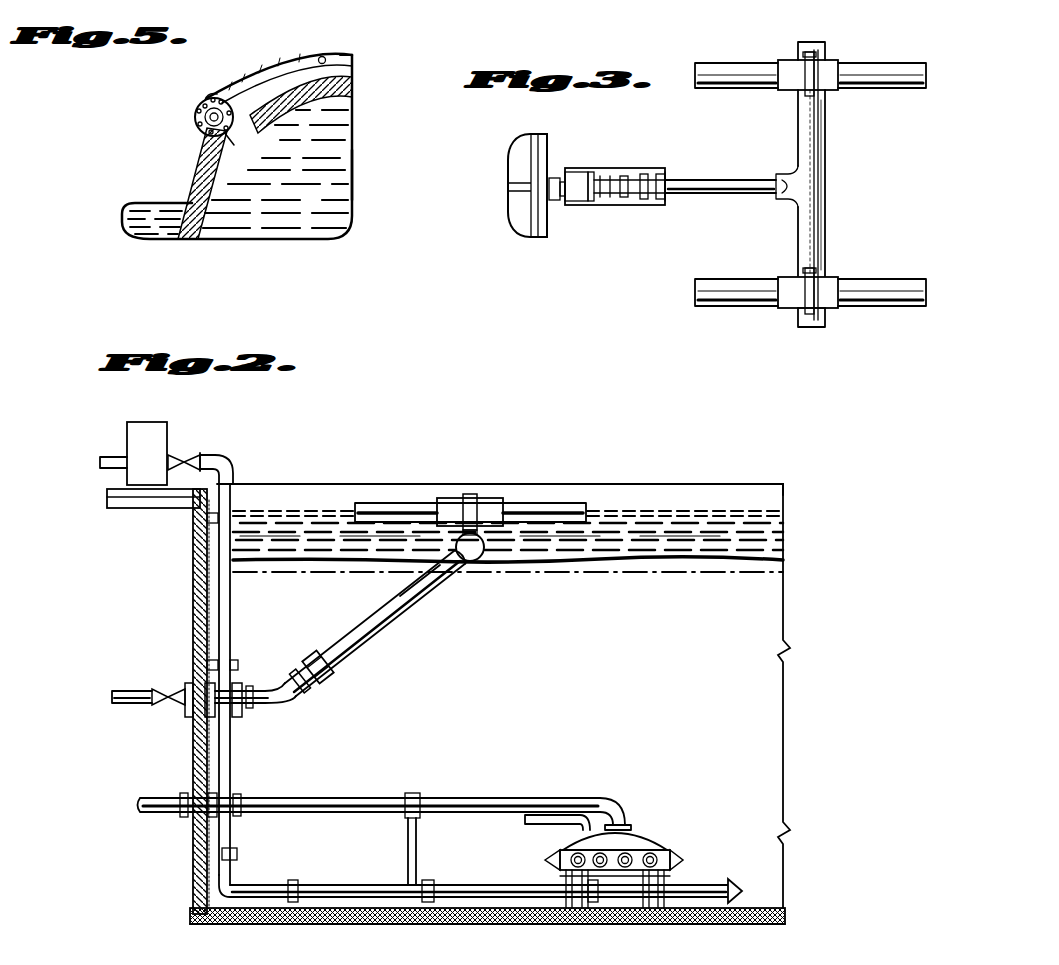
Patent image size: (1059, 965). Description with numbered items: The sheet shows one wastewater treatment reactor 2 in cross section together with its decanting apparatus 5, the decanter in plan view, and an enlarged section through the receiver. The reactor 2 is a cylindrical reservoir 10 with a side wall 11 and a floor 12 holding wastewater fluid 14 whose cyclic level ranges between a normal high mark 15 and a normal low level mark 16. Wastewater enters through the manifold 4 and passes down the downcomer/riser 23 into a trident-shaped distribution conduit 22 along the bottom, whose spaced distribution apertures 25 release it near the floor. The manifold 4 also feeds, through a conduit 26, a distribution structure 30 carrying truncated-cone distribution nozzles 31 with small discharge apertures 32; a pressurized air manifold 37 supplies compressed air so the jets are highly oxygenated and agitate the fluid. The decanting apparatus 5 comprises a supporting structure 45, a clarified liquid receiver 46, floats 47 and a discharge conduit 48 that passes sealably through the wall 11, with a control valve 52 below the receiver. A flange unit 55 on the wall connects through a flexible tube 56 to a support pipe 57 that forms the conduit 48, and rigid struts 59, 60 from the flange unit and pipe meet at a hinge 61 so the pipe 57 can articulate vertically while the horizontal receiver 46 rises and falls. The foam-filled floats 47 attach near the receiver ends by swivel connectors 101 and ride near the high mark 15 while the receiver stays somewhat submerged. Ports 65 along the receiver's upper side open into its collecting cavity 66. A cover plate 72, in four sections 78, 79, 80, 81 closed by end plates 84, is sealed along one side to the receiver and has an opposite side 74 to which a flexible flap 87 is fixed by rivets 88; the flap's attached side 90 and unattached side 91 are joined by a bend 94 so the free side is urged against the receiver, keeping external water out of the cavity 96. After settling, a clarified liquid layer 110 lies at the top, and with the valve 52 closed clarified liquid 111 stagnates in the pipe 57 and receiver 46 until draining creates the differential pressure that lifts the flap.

In FIG. 2, the reactor 2 is at (193, 598).
In FIG. 2, the manifold 4 is at (204, 458).
In FIG. 3, the decanting apparatus 5 is at (764, 158).
In FIG. 2, the decanting apparatus 5 is at (356, 652).
In FIG. 5, the reservoir 10 is at (102, 173).
In FIG. 3, the reservoir 10 is at (546, 238).
In FIG. 2, the reservoir 10 is at (193, 544).
In FIG. 2, the side wall 11 is at (193, 852).
In FIG. 2, the floor 12 is at (470, 914).
In FIG. 2, the wastewater fluid 14 is at (508, 595).
In FIG. 2, the normal high mark 15 is at (772, 502).
In FIG. 2, the normal low level mark 16 is at (707, 573).
In FIG. 2, the distribution conduit 22 is at (330, 884).
In FIG. 2, the downcomer/riser 23 is at (234, 606).
In FIG. 2, the distribution apertures 25 is at (372, 900).
In FIG. 2, the conduit 26 is at (455, 799).
In FIG. 2, the distribution structure 30 is at (633, 834).
In FIG. 2, the distribution nozzles 31 is at (672, 853).
In FIG. 2, the discharge apertures 32 is at (548, 862).
In FIG. 2, the pressurized air manifold 37 is at (545, 823).
In FIG. 2, the supporting structure 45 is at (318, 689).
In FIG. 5, the clarified liquid receiver 46 is at (186, 196).
In FIG. 3, the clarified liquid receiver 46 is at (827, 228).
In FIG. 2, the clarified liquid receiver 46 is at (474, 564).
In FIG. 3, the floats 47 is at (880, 63).
In FIG. 2, the floats 47 is at (558, 503).
In FIG. 3, the discharge conduit 48 is at (771, 200).
In FIG. 2, the discharge conduit 48 is at (355, 628).
In FIG. 2, the control valve 52 is at (158, 688).
In FIG. 2, the flange unit 55 is at (193, 721).
In FIG. 2, the flexible tube 56 is at (270, 693).
In FIG. 3, the support pipe 57 is at (734, 197).
In FIG. 2, the support pipe 57 is at (417, 602).
In FIG. 3, the rigid strut 59 is at (600, 170).
In FIG. 2, the rigid strut 59 is at (272, 709).
In FIG. 3, the rigid strut 60 is at (641, 170).
In FIG. 2, the rigid strut 60 is at (333, 672).
In FIG. 3, the hinge 61 is at (624, 170).
In FIG. 2, the hinge 61 is at (289, 702).
In FIG. 5, the ports 65 is at (282, 114).
In FIG. 5, the collecting cavity 66 is at (208, 200).
In FIG. 5, the cover plate 72 is at (352, 55).
In FIG. 5, the cover plate opposite side 74 is at (198, 104).
In FIG. 3, the cover plate section 78 is at (827, 326).
In FIG. 3, the cover plate section 79 is at (827, 258).
In FIG. 3, the cover plate section 80 is at (827, 130).
In FIG. 3, the cover plate section 81 is at (801, 50).
In FIG. 5, the end plate 84 is at (272, 68).
In FIG. 5, the flap 87 is at (198, 122).
In FIG. 5, the rivets 88 is at (210, 96).
In FIG. 5, the flap attached side 90 is at (246, 142).
In FIG. 5, the flap unattached side 91 is at (232, 152).
In FIG. 5, the bend 94 is at (208, 136).
In FIG. 5, the cavity 96 is at (318, 56).
In FIG. 3, the swivel connectors 101 is at (800, 282).
In FIG. 5, the clarified liquid layer 110 is at (140, 230).
In FIG. 2, the clarified liquid layer 110 is at (775, 539).
In FIG. 5, the clarified liquid 111 is at (353, 172).